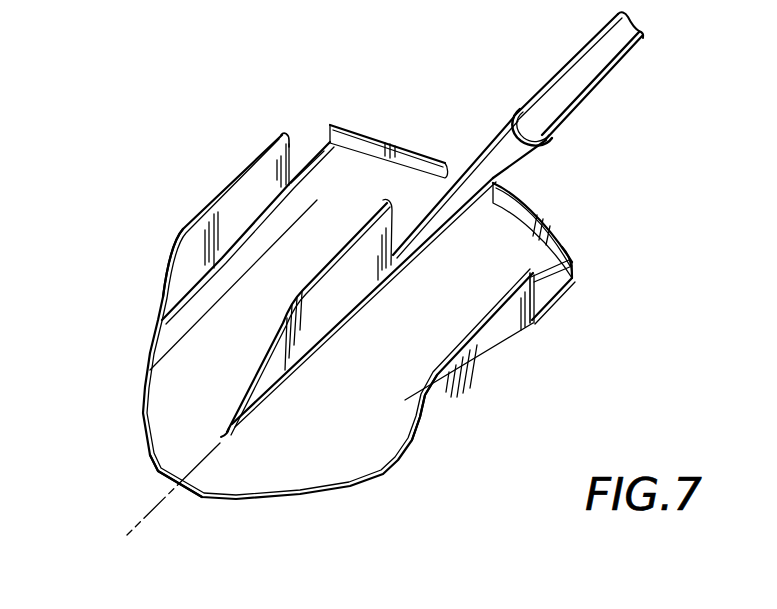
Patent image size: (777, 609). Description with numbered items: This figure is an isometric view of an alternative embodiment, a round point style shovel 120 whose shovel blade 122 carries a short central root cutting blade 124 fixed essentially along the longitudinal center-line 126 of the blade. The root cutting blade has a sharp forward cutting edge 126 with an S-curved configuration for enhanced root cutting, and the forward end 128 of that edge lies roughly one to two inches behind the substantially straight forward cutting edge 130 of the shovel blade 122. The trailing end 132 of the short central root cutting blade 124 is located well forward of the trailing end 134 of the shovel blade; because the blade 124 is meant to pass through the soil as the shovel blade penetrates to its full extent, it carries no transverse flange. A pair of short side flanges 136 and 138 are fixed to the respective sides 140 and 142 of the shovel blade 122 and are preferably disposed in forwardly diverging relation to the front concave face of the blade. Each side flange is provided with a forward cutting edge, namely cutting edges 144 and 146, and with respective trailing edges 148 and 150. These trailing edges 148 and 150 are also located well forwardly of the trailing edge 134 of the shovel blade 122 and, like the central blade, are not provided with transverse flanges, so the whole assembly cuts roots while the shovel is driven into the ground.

The round point style shovel 120 is at (145, 140).
The shovel blade 122 is at (185, 345).
The short central root cutting blade 124 is at (350, 277).
The longitudinal center-line / forward cutting edge 126 is at (266, 369).
The forward end of the root cutting edge 128 is at (226, 432).
The forward cutting edge of the shovel blade 130 is at (155, 479).
The trailing end of the short central root cutting blade 132 is at (395, 217).
The trailing end of the shovel blade 134 is at (527, 216).
The side flange 136 is at (232, 184).
The side flange 138 is at (497, 345).
The side of the shovel blade 140 is at (313, 152).
The side of the shovel blade 142 is at (570, 293).
The forward cutting edge of side flange 144 is at (167, 267).
The forward cutting edge of side flange 146 is at (419, 413).
The trailing edge of side flange 148 is at (283, 130).
The trailing edge of side flange 150 is at (573, 258).